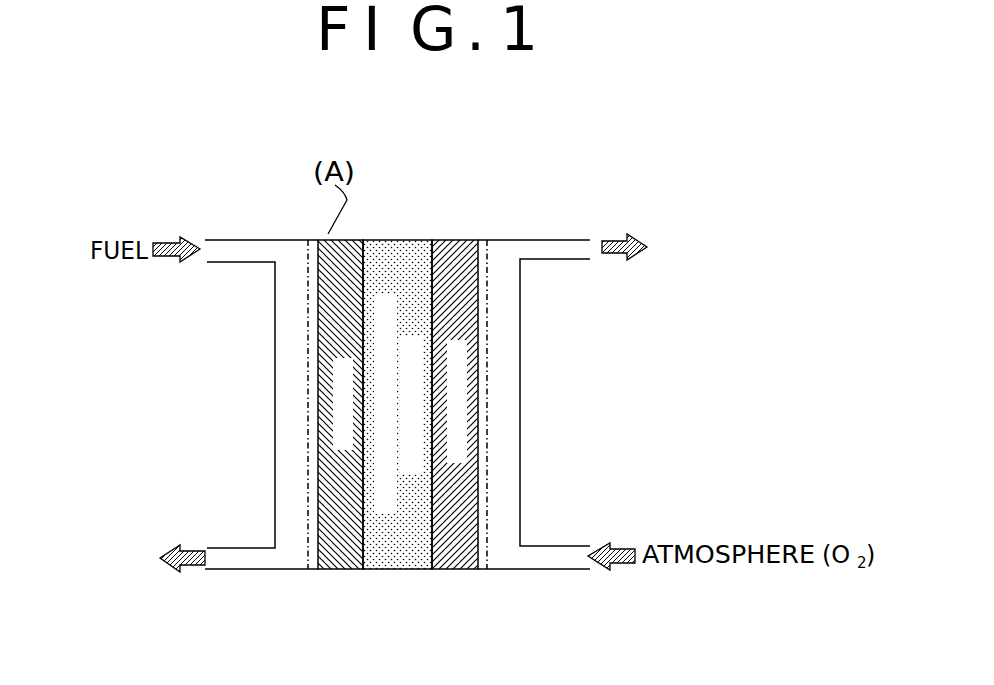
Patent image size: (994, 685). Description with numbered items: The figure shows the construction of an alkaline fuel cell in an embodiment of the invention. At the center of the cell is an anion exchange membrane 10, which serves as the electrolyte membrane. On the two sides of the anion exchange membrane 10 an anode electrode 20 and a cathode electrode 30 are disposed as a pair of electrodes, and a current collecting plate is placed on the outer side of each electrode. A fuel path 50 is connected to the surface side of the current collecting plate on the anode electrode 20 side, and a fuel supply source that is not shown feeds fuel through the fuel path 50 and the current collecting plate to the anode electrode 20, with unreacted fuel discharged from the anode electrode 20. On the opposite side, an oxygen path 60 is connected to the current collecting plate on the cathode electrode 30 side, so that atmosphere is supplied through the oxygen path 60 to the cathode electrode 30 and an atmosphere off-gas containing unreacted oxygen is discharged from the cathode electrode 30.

The anion exchange membrane 10 is at (403, 570).
The anode electrode 20 is at (352, 570).
The cathode electrode 30 is at (450, 560).
The fuel path 50 is at (287, 552).
The oxygen path 60 is at (505, 553).